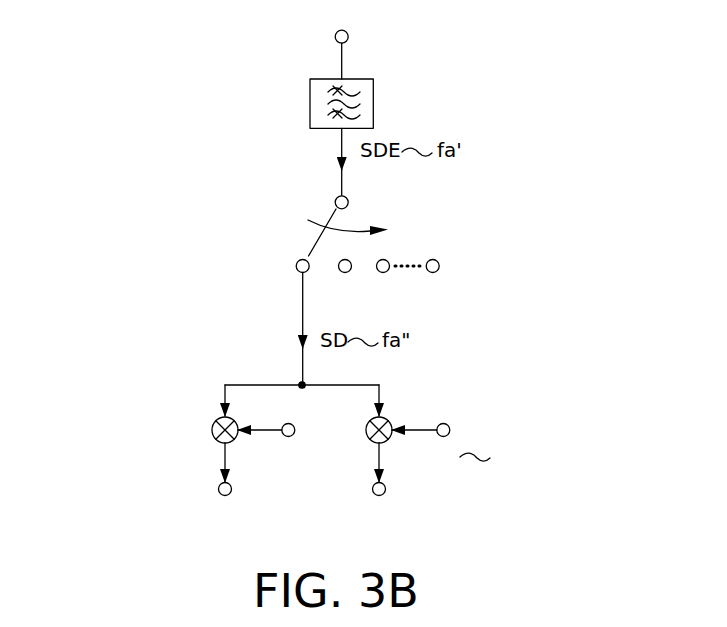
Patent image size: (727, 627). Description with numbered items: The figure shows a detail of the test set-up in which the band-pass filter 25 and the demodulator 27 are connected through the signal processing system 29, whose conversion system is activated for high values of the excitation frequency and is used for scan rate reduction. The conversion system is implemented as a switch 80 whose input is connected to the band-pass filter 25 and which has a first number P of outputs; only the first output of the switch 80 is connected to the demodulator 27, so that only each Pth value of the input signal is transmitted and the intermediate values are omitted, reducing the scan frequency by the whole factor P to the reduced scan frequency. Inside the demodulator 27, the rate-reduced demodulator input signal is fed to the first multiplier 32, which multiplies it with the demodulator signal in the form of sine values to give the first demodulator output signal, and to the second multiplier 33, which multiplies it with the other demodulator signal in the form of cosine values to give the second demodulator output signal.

The band-pass filter 25 is at (375, 101).
The switch 80 is at (322, 226).
The signal processing system 29 is at (291, 269).
The demodulator 27 is at (148, 383).
The second multiplier 33 is at (212, 435).
The first multiplier 32 is at (366, 436).